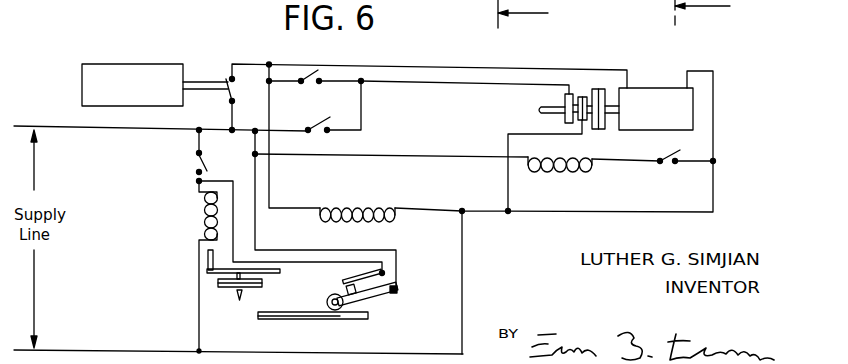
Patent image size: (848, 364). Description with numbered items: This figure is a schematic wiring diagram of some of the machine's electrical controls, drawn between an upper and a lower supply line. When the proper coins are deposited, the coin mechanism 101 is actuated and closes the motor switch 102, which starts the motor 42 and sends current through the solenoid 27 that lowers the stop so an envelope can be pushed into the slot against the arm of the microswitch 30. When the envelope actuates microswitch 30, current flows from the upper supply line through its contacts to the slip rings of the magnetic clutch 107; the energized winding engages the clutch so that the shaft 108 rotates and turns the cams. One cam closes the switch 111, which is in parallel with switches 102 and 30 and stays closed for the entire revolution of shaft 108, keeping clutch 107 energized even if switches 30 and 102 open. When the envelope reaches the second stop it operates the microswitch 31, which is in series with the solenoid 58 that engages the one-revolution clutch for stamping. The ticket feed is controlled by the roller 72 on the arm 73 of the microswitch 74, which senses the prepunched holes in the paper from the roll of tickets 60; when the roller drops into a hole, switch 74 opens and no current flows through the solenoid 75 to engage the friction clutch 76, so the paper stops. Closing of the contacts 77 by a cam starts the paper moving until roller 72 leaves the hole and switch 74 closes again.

The coin mechanism 101 is at (110, 63).
The motor switch 102 is at (224, 80).
The microswitch 30 is at (310, 73).
The switch 111 is at (320, 121).
The magnetic clutch 107 is at (599, 88).
The motor 42 is at (644, 88).
The shaft 108 is at (545, 107).
The solenoid 58 is at (576, 160).
The microswitch 31 is at (673, 153).
The contacts 77 is at (205, 170).
The solenoid 75 is at (206, 226).
The friction clutch 76 is at (232, 292).
The solenoid 27 is at (367, 207).
The microswitch 74 is at (343, 289).
The arm 73 is at (373, 295).
The roller 72 is at (332, 312).
The roll of tickets 60 is at (352, 319).